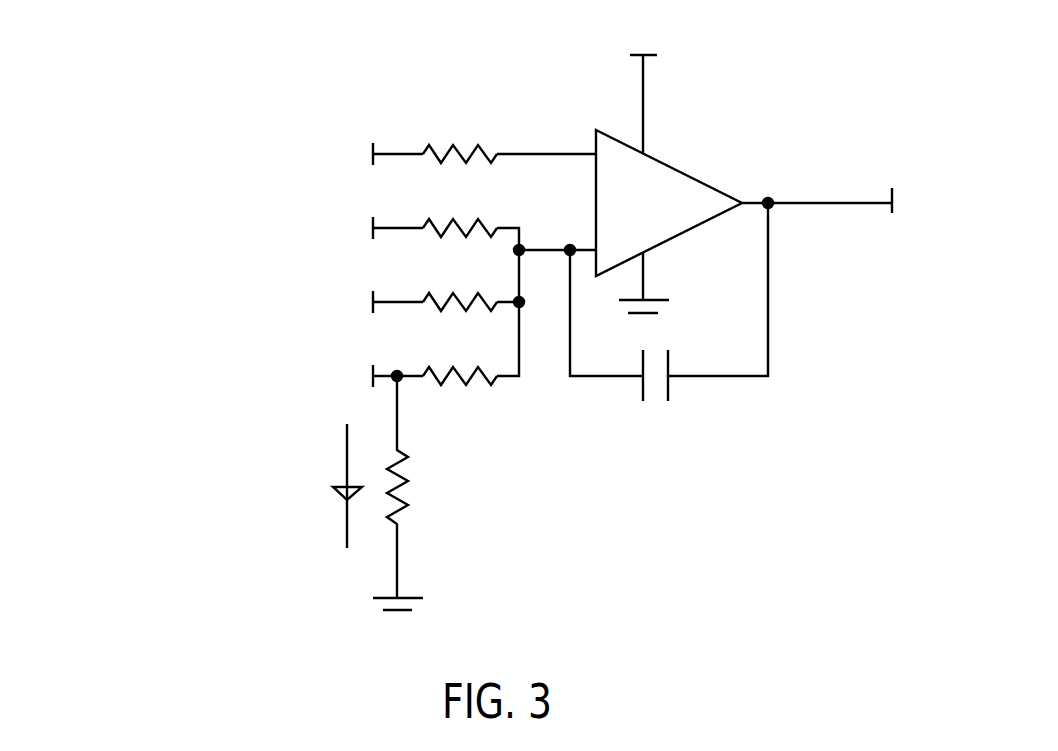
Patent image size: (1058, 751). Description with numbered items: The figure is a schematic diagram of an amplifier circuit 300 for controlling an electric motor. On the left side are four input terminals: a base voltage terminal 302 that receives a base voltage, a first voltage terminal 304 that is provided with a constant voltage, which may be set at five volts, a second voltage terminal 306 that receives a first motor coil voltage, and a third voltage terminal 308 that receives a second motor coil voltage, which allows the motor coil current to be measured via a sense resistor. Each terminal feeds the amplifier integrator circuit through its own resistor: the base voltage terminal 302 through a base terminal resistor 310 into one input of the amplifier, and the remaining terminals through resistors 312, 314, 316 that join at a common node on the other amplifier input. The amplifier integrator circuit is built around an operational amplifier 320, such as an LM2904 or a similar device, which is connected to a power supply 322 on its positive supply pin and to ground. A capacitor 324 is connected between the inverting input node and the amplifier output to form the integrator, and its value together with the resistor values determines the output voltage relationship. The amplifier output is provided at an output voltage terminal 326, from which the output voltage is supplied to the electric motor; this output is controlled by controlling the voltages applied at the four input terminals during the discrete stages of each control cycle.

The amplifier circuit 300 is at (280, 63).
The base voltage terminal 302 is at (371, 160).
The first voltage terminal 304 is at (371, 234).
The second voltage terminal 306 is at (371, 308).
The third voltage terminal 308 is at (371, 382).
The base terminal resistor 310 is at (453, 145).
The resistor 312 is at (453, 219).
The resistor 314 is at (453, 293).
The resistor 316 is at (453, 367).
The operational amplifier 320 is at (673, 165).
The power supply 322 is at (700, 36).
The capacitor 324 is at (670, 390).
The output voltage terminal 326 is at (920, 242).